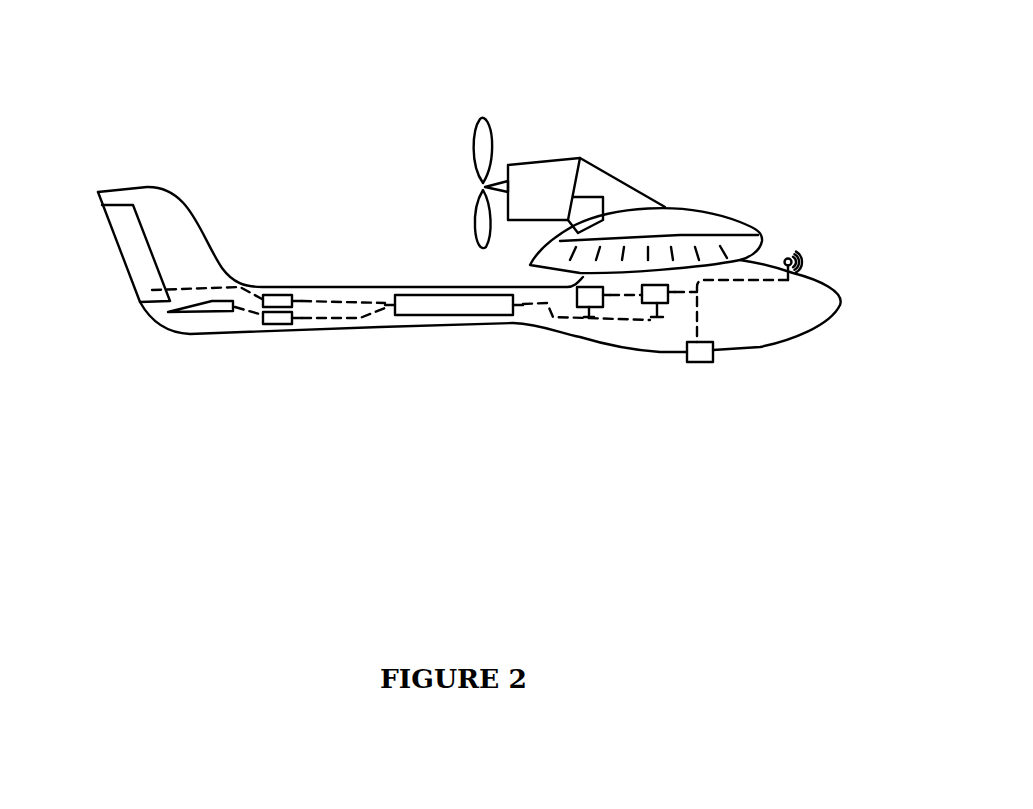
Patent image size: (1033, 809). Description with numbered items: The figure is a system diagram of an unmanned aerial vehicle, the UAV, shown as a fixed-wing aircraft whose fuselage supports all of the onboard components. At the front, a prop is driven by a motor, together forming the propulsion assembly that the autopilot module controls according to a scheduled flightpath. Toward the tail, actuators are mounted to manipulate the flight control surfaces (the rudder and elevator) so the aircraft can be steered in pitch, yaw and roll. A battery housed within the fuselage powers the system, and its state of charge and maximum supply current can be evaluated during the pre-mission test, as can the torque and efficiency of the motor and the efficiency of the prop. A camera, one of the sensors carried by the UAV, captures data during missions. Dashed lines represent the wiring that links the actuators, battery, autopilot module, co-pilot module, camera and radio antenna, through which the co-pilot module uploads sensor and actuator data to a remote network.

The unmanned aerial vehicle UAV is at (730, 115).
The element prop is at (489, 104).
The element motor is at (560, 140).
The element actuators is at (284, 346).
The element battery is at (454, 331).
The element camera is at (700, 375).
The element fuselage is at (784, 345).